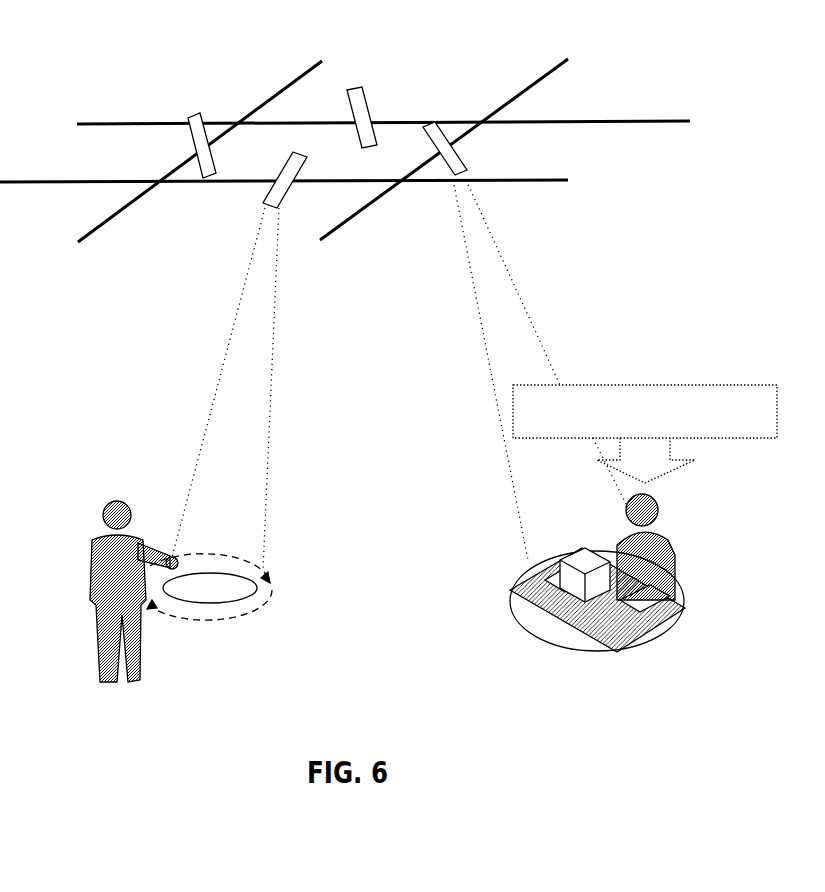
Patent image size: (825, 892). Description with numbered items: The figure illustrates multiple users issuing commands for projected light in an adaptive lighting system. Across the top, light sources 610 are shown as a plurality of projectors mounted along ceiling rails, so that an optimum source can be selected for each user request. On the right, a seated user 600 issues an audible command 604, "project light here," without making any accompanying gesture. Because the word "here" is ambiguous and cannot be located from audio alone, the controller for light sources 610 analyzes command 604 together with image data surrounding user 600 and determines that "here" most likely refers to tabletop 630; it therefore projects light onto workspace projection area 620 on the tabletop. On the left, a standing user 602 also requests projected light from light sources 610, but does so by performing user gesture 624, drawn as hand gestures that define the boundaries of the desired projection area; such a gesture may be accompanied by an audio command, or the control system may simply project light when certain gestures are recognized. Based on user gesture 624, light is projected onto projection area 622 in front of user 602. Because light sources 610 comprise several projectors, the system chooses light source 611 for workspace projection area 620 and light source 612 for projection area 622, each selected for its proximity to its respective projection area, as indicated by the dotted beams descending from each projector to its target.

The user 600 is at (661, 592).
The user 602 is at (134, 607).
The audible command 604 is at (645, 422).
The light sources 610 is at (542, 150).
The light source 611 is at (443, 123).
The light source 612 is at (295, 148).
The workspace projection area 620 is at (607, 580).
The projection area 622 is at (210, 588).
The user gesture 624 is at (168, 568).
The tabletop 630 is at (683, 610).